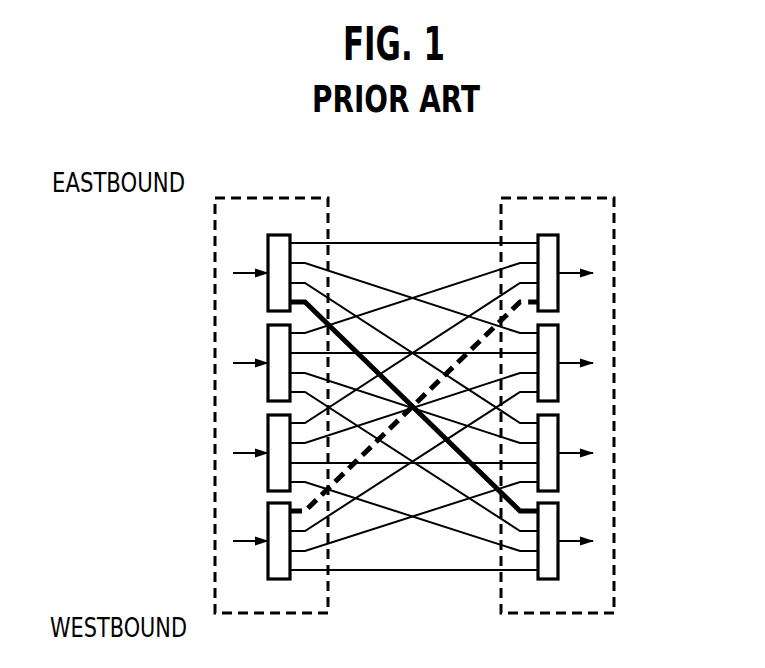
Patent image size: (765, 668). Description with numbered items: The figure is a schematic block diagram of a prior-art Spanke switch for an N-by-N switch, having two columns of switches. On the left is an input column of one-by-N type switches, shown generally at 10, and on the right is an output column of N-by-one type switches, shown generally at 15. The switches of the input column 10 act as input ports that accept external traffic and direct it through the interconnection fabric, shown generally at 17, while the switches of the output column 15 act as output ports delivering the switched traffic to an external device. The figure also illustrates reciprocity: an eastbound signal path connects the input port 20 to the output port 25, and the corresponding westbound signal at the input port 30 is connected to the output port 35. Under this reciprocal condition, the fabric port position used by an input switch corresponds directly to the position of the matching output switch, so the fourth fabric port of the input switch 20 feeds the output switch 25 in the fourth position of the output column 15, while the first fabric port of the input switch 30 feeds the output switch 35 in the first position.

The left input column of 1×N switches 10 is at (266, 196).
The right output column of N×1 switches 15 is at (578, 196).
The interconnection fabric 17 is at (440, 212).
The input port 20 is at (266, 247).
The output port 25 is at (552, 520).
The input port 30 is at (268, 562).
The output port 35 is at (553, 248).